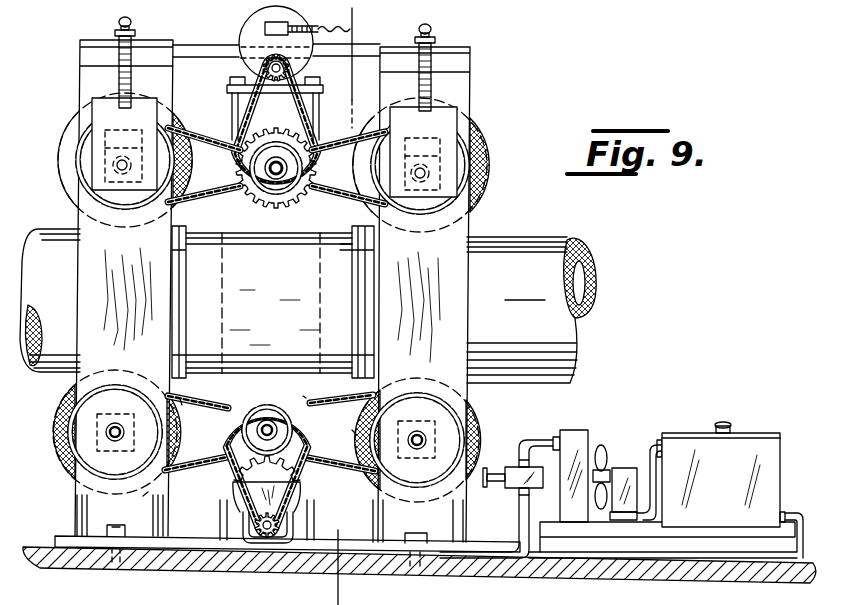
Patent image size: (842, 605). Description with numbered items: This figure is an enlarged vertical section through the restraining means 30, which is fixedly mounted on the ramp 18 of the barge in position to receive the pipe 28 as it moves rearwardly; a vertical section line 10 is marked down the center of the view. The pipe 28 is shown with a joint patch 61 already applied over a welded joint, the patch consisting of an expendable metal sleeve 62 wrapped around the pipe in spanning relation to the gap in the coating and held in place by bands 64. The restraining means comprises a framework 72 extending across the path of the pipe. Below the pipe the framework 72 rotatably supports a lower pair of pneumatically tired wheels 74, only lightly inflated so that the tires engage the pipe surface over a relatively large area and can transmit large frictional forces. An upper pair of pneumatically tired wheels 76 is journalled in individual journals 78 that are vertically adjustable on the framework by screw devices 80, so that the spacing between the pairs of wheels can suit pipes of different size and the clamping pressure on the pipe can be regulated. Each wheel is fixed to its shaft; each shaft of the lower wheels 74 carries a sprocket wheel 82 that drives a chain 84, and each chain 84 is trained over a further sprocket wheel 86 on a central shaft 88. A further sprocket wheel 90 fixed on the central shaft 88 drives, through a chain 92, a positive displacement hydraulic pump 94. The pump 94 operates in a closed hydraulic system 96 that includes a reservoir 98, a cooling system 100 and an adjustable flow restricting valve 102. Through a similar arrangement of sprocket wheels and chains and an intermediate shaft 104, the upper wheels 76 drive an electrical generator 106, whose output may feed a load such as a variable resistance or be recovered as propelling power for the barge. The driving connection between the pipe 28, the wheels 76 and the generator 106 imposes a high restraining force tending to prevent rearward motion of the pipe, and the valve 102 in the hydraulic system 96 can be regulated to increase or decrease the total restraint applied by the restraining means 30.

The centerline 10 is at (357, 22).
The ramp 18 is at (679, 571).
The pipe 28 is at (538, 258).
The restraining means 30 is at (518, 100).
The joint patch 61 is at (342, 246).
The expendable metal sleeve 62 is at (208, 250).
The bands 64 is at (184, 290).
The framework 72 is at (90, 273).
The pneumatically tired wheels 74 is at (58, 413).
The upper pair of pneumatically tired wheels 76 is at (70, 142).
The journals 78 is at (96, 163).
The screw devices 80 is at (118, 33).
The sprocket wheel 82 is at (145, 497).
The chain 84 is at (176, 470).
The further sprocket wheel 86 is at (305, 396).
The central shaft 88 is at (248, 382).
The further sprocket wheel 90 is at (215, 445).
The chain 92 is at (220, 500).
The positive displacement hydraulic pump 94 is at (278, 491).
The closed hydraulic system 96 is at (488, 550).
The reservoir 98 is at (765, 454).
The cooling system 100 is at (598, 436).
The adjustable flow restricting valve 102 is at (515, 466).
The intermediate shaft 104 is at (278, 176).
The electrical generator 106 is at (251, 35).